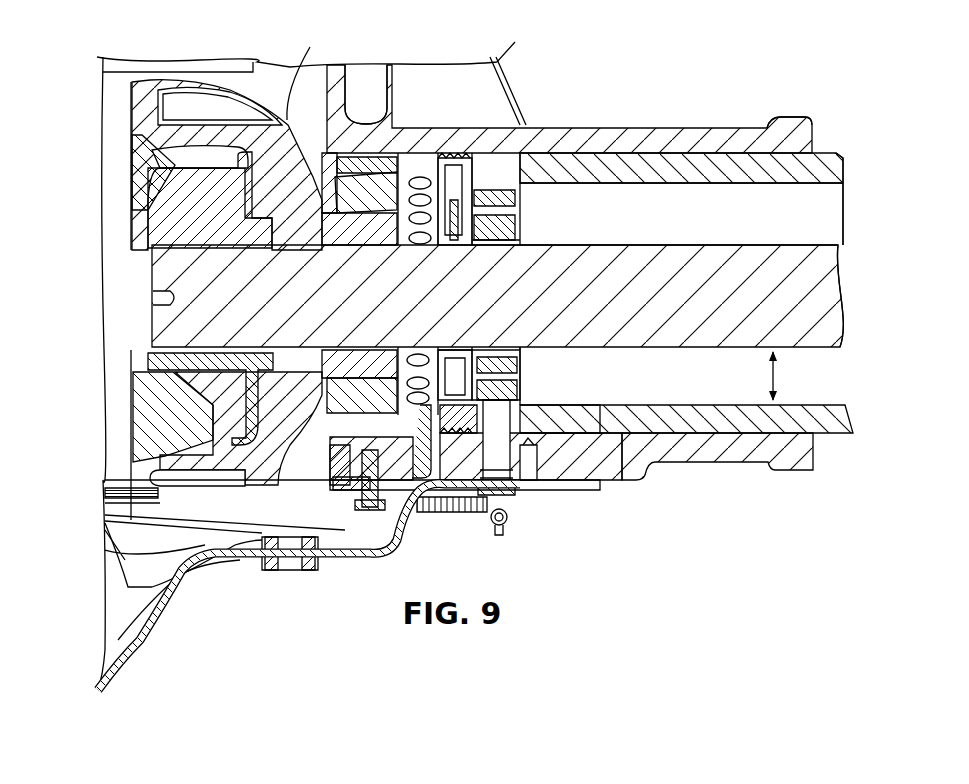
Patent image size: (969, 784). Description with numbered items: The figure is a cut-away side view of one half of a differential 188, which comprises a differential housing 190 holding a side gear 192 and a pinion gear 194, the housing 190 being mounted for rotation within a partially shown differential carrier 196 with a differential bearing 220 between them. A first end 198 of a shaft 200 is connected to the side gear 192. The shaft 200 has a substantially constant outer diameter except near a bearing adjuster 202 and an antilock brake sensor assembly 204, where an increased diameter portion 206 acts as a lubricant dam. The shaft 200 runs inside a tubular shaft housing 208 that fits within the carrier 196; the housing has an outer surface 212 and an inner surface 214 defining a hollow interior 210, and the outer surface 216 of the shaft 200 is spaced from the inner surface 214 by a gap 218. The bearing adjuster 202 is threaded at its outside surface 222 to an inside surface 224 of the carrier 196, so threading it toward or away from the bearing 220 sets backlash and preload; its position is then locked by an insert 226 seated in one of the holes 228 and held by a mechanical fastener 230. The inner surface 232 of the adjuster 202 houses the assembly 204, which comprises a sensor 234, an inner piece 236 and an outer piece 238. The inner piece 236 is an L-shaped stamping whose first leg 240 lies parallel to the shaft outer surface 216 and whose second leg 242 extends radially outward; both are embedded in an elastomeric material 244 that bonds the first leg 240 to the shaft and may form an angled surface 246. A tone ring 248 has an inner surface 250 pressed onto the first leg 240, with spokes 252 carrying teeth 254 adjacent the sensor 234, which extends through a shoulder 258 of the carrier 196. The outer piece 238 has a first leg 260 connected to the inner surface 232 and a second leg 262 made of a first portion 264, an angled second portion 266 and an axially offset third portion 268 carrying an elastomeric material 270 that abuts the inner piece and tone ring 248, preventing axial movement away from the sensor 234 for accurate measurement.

The differential 188 is at (263, 80).
The differential housing 190 is at (241, 257).
The side gear 192 is at (160, 218).
The pinion gear 194 is at (155, 163).
The differential carrier 196 is at (364, 118).
The first end 198 is at (232, 308).
The shaft 200 is at (835, 318).
The bearing adjuster 202 is at (452, 152).
The antilock brake sensor assembly 204 is at (486, 162).
The increased diameter portion 206 is at (580, 245).
The shaft housing 208 is at (845, 153).
The hollow interior 210 is at (833, 212).
The outer surface 212 is at (818, 128).
The inner surface 214 is at (700, 184).
The outer surface 216 is at (753, 245).
The gap 218 is at (686, 392).
The differential bearing 220 is at (300, 482).
The outside surface 222 is at (470, 513).
The inside surface 224 is at (405, 152).
The insert 226 is at (408, 500).
The holes 228 is at (522, 378).
The mechanical fastener 230 is at (372, 512).
The inner surface 232 is at (492, 452).
The sensor 234 is at (522, 452).
The inner piece 236 is at (500, 241).
The outer piece 238 is at (461, 153).
The first leg 240 is at (510, 352).
The second leg 242 is at (450, 356).
The elastomeric material 244 is at (490, 350).
The angled surface 246 is at (445, 246).
The tone ring 248 is at (520, 195).
The inner surface 250 is at (487, 248).
The spokes 252 is at (480, 390).
The tone ring teeth 254 is at (521, 412).
The shoulder 258 is at (608, 463).
The first leg 260 is at (447, 175).
The second leg 262 is at (478, 190).
The first portion 264 is at (405, 195).
The second portion 266 is at (425, 222).
The third portion 268 is at (494, 220).
The elastomeric material 270 is at (465, 352).